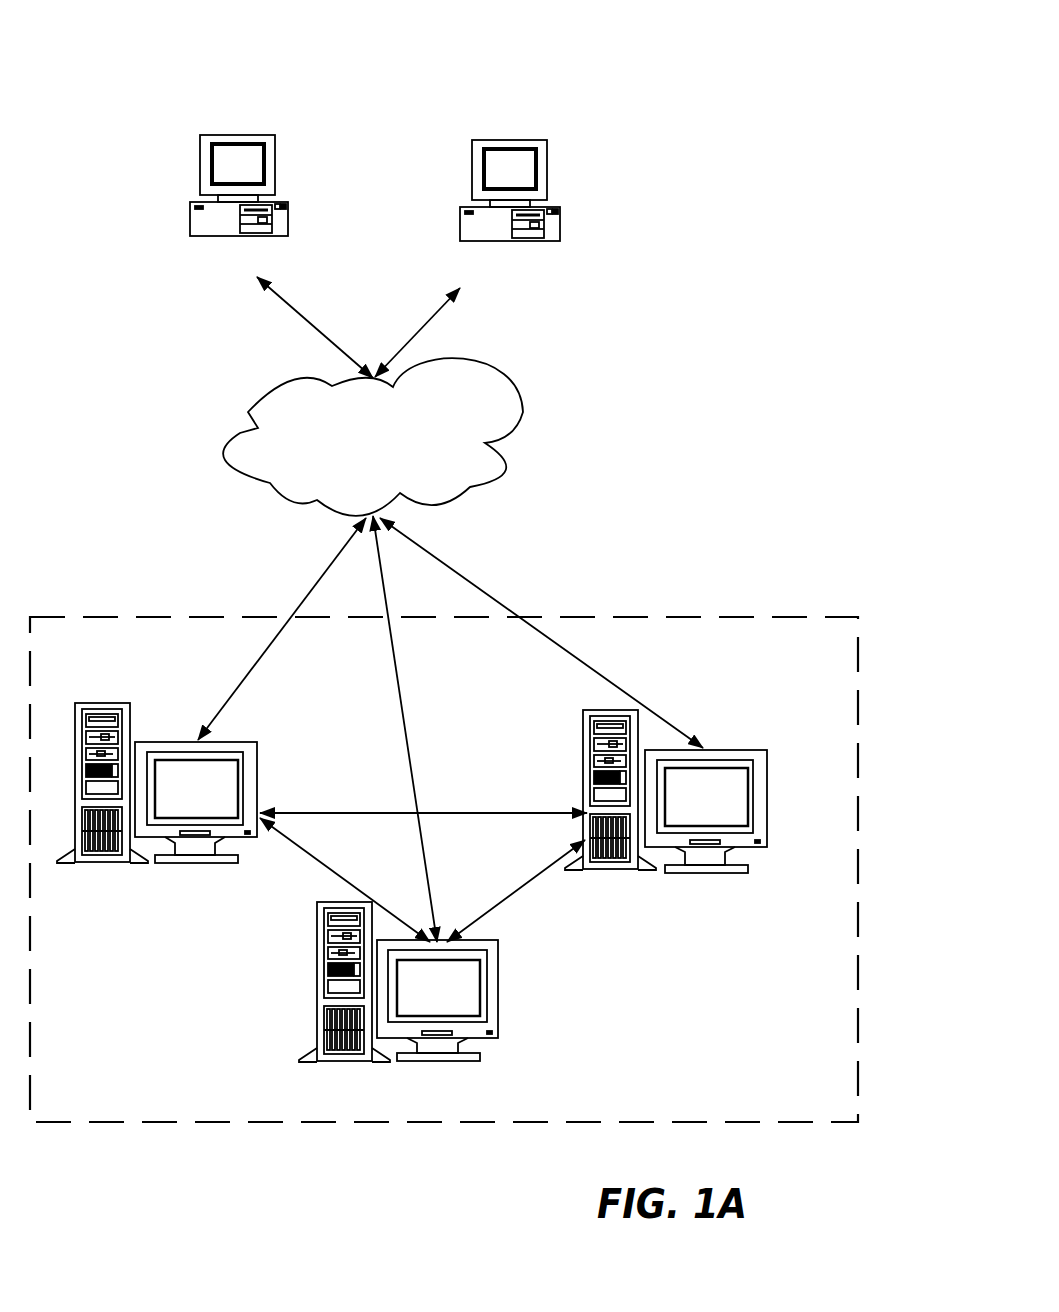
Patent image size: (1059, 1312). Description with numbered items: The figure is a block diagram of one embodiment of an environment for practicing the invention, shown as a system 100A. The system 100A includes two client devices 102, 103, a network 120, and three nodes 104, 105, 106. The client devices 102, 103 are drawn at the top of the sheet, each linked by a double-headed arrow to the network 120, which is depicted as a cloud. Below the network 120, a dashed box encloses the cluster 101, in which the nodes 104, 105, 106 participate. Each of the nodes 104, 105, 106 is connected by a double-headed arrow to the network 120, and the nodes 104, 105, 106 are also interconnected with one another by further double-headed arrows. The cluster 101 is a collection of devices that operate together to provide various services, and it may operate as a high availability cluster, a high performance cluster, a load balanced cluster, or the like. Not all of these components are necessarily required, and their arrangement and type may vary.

The system 100A is at (600, 76).
The cluster 101 is at (444, 869).
The client device 102 is at (289, 208).
The client device 103 is at (561, 214).
The node 104 is at (258, 785).
The node 105 is at (498, 985).
The node 106 is at (767, 790).
The network 120 is at (258, 428).